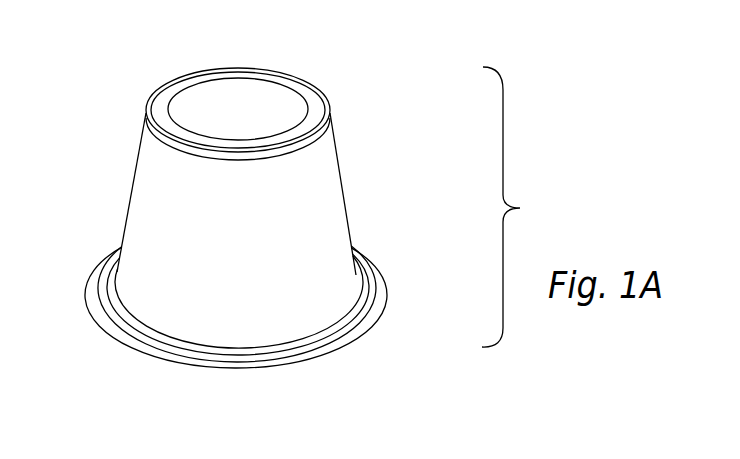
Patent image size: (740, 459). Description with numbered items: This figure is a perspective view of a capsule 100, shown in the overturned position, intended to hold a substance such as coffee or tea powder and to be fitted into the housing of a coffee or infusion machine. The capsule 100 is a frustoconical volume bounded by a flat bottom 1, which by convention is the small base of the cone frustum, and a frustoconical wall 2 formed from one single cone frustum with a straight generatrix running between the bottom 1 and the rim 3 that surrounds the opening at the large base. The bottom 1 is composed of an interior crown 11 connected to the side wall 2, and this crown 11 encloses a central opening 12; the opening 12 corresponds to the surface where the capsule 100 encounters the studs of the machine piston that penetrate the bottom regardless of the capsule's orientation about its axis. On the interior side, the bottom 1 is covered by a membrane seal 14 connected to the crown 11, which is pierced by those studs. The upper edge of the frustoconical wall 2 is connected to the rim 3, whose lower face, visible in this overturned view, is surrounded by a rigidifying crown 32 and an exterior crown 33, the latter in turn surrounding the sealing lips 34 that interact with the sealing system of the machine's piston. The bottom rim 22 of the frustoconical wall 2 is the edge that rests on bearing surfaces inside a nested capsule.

The bottom 1 is at (255, 195).
The frustoconical wall 2 is at (240, 194).
The rim 3 is at (269, 307).
The interior crown 11 is at (313, 117).
The central opening 12 is at (255, 85).
The membrane seal 14 is at (212, 97).
The bottom rim 22 is at (142, 133).
The rigidifying crown 32 is at (370, 301).
The exterior crown 33 is at (377, 325).
The sealing lips 34 is at (347, 338).
The capsule 100 is at (528, 207).